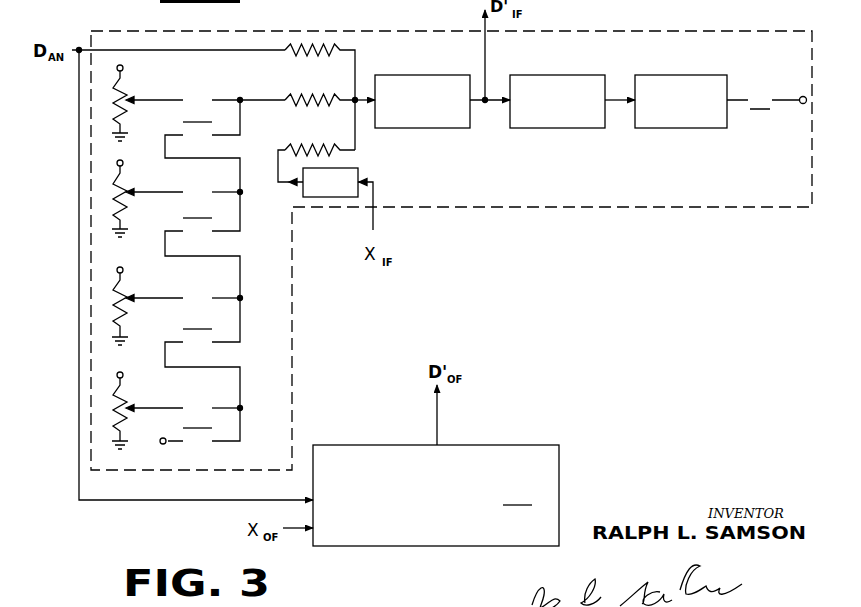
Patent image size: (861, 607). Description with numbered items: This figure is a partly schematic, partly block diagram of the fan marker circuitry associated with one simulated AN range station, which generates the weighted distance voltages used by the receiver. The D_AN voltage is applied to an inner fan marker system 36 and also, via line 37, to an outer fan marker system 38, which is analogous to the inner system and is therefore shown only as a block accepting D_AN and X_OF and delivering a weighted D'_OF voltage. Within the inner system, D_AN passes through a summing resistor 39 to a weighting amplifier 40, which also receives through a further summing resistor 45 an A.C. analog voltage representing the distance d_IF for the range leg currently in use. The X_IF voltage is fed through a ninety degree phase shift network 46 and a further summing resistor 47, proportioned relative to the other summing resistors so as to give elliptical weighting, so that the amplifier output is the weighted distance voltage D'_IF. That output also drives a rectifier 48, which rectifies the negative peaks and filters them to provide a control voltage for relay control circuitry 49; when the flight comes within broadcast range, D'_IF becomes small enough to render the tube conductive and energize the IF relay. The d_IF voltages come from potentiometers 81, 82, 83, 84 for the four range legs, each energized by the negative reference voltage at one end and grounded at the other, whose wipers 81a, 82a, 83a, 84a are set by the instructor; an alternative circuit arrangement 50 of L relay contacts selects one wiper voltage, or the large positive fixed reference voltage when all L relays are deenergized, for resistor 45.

The inner fan marker system 36 is at (313, 212).
The line 37 is at (79, 272).
The outer fan marker system 38 is at (353, 445).
The summing resistor 39 is at (310, 58).
The weighting amplifier 40 is at (412, 75).
The summing resistor 45 is at (309, 108).
The 90° phase shift network 46 is at (358, 168).
The summing resistor 47 is at (318, 149).
The rectifier 48 is at (552, 75).
The relay control circuitry 49 is at (680, 75).
The alternative circuit arrangement 50 is at (275, 255).
The potentiometer 81 is at (136, 71).
The wiper 81a is at (140, 104).
The potentiometer 82 is at (136, 166).
The wiper 82a is at (140, 196).
The potentiometer 83 is at (136, 273).
The wiper 83a is at (140, 302).
The potentiometer 84 is at (136, 378).
The wiper 84a is at (140, 412).